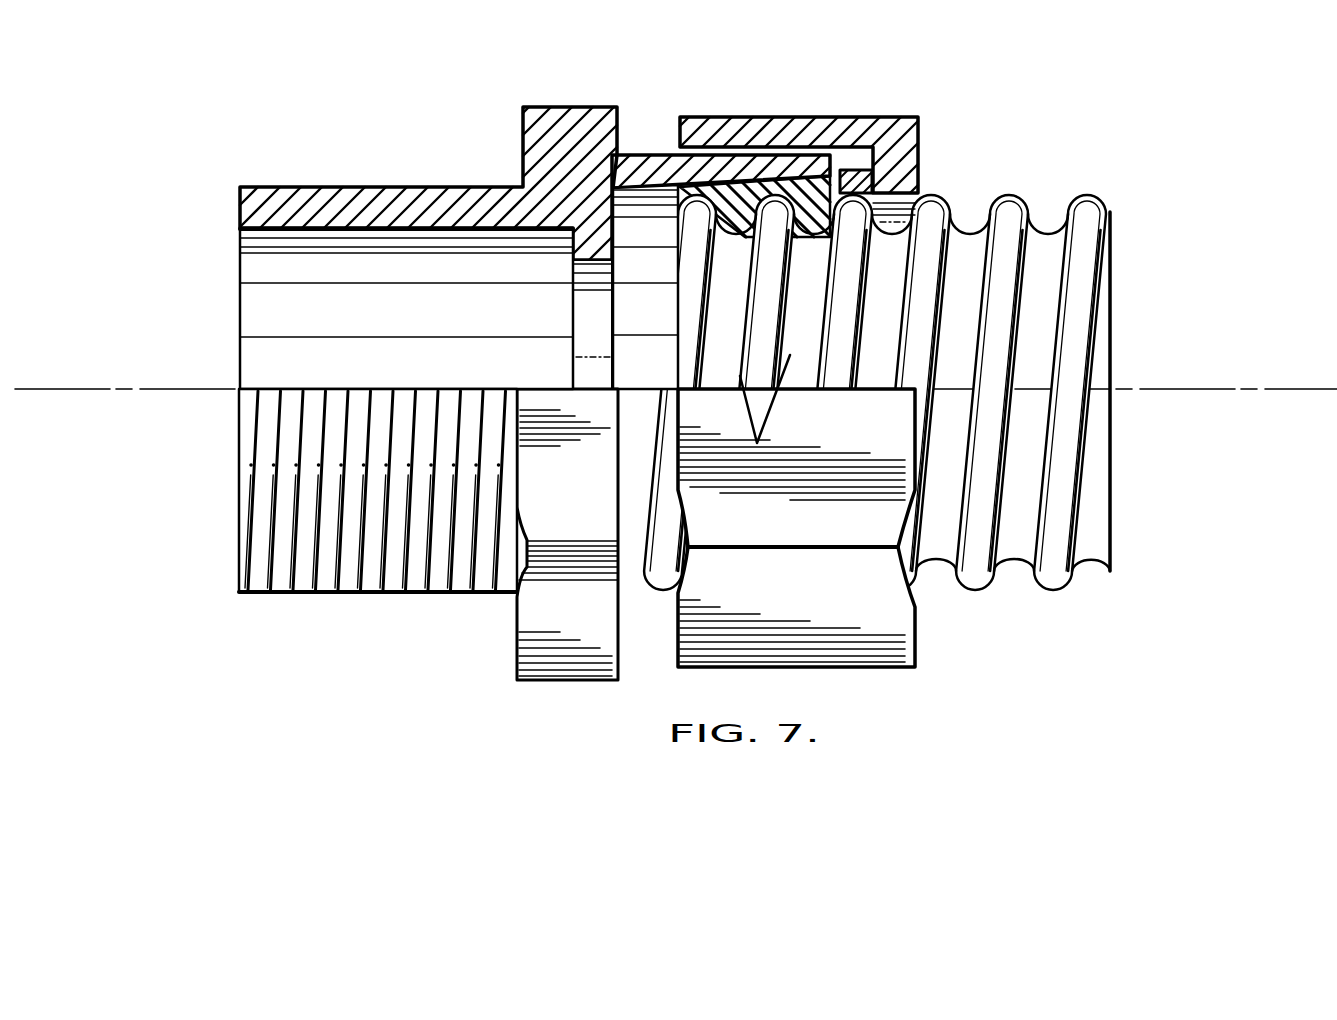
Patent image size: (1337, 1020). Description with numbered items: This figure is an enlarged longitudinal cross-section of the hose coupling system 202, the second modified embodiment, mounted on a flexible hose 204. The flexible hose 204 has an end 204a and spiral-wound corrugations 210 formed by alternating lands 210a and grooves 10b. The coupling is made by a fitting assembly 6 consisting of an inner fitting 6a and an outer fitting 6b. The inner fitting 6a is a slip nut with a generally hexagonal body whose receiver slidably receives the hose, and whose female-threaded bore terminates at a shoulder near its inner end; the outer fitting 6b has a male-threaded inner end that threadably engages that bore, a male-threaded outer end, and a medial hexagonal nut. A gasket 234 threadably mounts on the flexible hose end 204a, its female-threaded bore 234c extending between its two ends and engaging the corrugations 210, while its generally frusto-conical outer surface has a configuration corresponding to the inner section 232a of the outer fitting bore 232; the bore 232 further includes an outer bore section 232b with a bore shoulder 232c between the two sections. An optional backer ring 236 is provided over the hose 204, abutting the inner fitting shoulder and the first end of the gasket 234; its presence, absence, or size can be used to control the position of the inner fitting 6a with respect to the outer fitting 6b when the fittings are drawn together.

The hose coupling system 202 is at (932, 372).
The spiral-wound corrugations 210 is at (932, 400).
The lands 210a is at (1085, 195).
The flexible hose 204 is at (1107, 568).
The flexible hose end 204a is at (677, 318).
The grooves 10b is at (1012, 562).
The gasket 234 is at (662, 198).
The female-threaded bore 234c is at (821, 240).
The backer ring 236 is at (866, 172).
The outer fitting bore 232 is at (362, 308).
The outer fitting bore inner section 232a is at (670, 367).
The outer bore section 232b is at (333, 325).
The bore shoulder 232c is at (572, 262).
The fitting assembly 6 is at (467, 663).
The inner fitting 6a is at (912, 668).
The outer fitting 6b is at (239, 598).